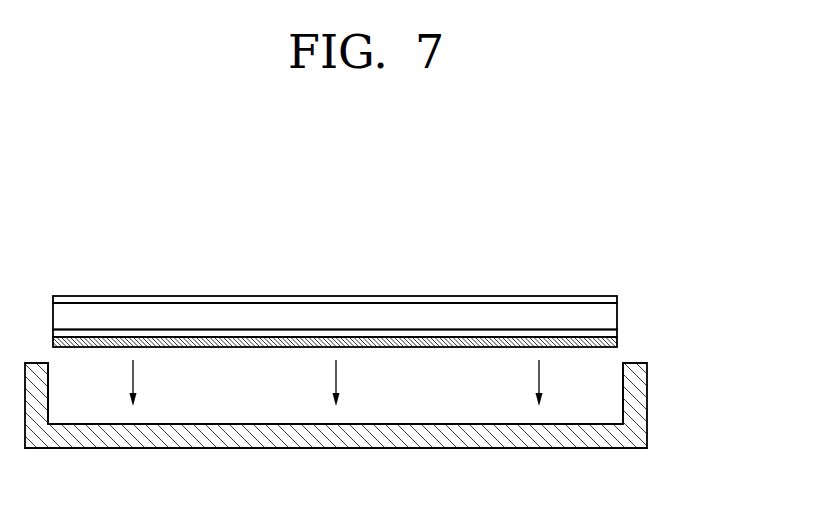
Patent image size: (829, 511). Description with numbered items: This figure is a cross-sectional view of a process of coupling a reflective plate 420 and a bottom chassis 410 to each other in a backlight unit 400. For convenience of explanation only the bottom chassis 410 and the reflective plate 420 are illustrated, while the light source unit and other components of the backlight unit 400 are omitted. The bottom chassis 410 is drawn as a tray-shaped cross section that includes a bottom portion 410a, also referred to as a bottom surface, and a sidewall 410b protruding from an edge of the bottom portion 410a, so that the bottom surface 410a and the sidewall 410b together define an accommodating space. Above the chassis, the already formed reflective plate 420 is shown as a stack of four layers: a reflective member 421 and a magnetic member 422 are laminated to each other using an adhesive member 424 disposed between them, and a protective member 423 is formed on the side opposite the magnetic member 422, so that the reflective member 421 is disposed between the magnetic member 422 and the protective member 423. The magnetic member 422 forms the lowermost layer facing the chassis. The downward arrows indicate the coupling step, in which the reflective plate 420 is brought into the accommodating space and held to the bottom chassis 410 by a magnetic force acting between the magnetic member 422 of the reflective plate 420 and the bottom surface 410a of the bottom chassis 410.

The backlight unit 400 is at (580, 240).
The bottom chassis 410 is at (748, 382).
The bottom portion 410a is at (578, 440).
The sidewall 410b is at (632, 390).
The reflective plate 420 is at (737, 277).
The reflective member 421 is at (612, 317).
The magnetic member 422 is at (617, 342).
The protective member 423 is at (617, 299).
The adhesive member 424 is at (617, 333).